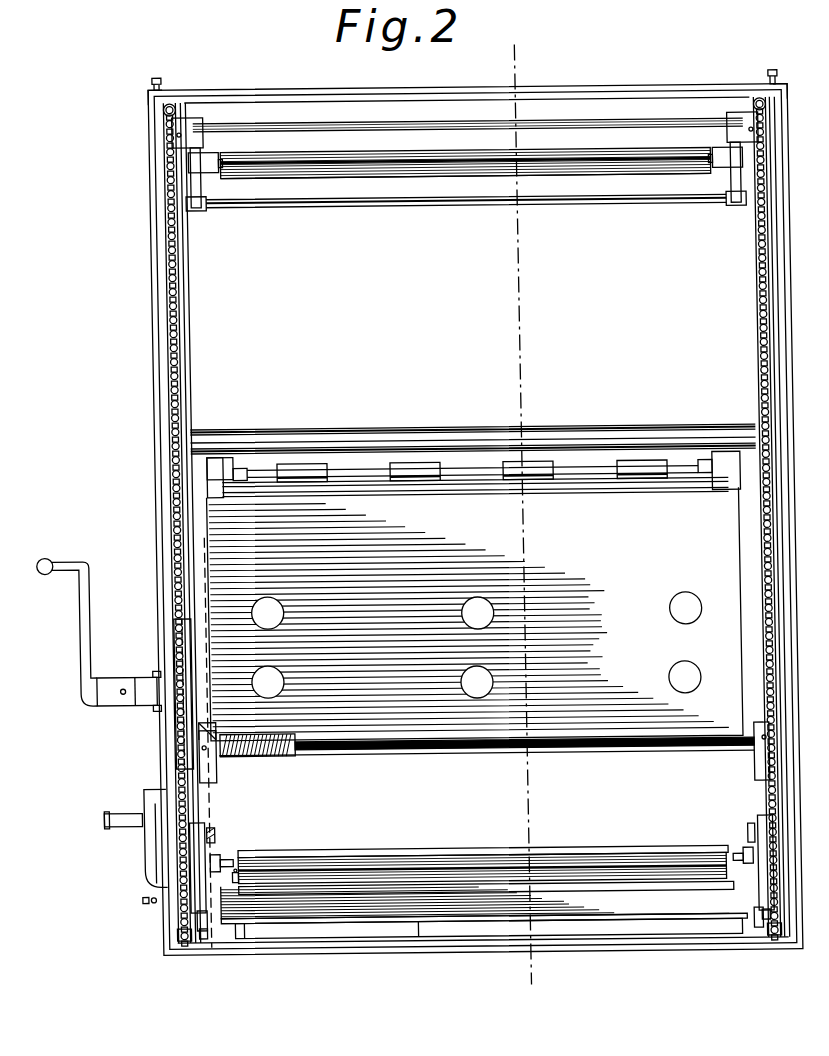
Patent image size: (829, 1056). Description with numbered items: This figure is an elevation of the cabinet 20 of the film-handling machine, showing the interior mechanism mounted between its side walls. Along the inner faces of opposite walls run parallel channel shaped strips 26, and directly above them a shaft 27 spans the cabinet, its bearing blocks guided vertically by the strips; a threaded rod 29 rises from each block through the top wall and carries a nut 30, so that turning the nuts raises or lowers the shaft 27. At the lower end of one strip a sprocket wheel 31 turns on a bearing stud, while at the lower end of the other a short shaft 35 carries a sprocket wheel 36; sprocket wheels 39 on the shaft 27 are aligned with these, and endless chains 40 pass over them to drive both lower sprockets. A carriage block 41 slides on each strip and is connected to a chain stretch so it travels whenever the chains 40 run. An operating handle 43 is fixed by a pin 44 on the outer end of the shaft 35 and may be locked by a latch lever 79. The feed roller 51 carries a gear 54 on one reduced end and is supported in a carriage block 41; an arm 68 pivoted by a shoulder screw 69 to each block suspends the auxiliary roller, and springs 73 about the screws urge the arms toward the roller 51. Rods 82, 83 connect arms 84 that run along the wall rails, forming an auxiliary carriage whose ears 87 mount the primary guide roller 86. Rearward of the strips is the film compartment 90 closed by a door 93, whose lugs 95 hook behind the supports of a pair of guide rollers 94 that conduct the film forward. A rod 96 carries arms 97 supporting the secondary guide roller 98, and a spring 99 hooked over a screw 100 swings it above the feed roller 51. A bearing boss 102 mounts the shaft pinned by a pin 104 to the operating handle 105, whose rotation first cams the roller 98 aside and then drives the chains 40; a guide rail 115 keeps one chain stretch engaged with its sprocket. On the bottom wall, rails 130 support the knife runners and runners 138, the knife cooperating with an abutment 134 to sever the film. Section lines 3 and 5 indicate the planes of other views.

The section line 3- 3 is at (520, 512).
The section line 5- 5 is at (216, 996).
The cabinet 20 is at (150, 346).
The channel shaped strips 26 is at (189, 325).
The shaft 27 is at (253, 137).
The threaded rod 29 is at (175, 67).
The nut 30 is at (150, 86).
The sprocket wheel 31 is at (784, 918).
The short shaft 35 is at (138, 898).
The sprocket wheel 36 is at (178, 930).
The sprocket wheels 39 is at (174, 105).
The endless chains 40 is at (760, 252).
The carriage block 41 is at (210, 860).
The operating handle 43 is at (146, 862).
The pin 44 is at (147, 902).
The feed roller 51 is at (323, 880).
The gear 54 is at (233, 872).
The arm 68 is at (200, 920).
The shoulder screw 69 is at (216, 836).
The springs 73 is at (200, 830).
The latch lever 79 is at (147, 789).
The rod 82 is at (425, 205).
The rod 83 is at (430, 122).
The arms 84 is at (203, 183).
The primary guide roller 86 is at (590, 178).
The ears 87 is at (195, 160).
The compartment 90 is at (690, 666).
The door 93 is at (474, 614).
The guide rollers 94 is at (316, 466).
The lugs 95 is at (216, 478).
The rod 96 is at (433, 748).
The arms 97 is at (212, 762).
The secondary guide roller 98 is at (427, 849).
The spring 99 is at (276, 754).
The screw 100 is at (212, 720).
The bearing boss 102 is at (146, 702).
The pin 104 is at (122, 685).
The operating handle 105 is at (80, 648).
The guide rail 115 is at (176, 630).
The rails 130 is at (233, 927).
The abutment 134 is at (420, 919).
The runners 138 is at (202, 936).